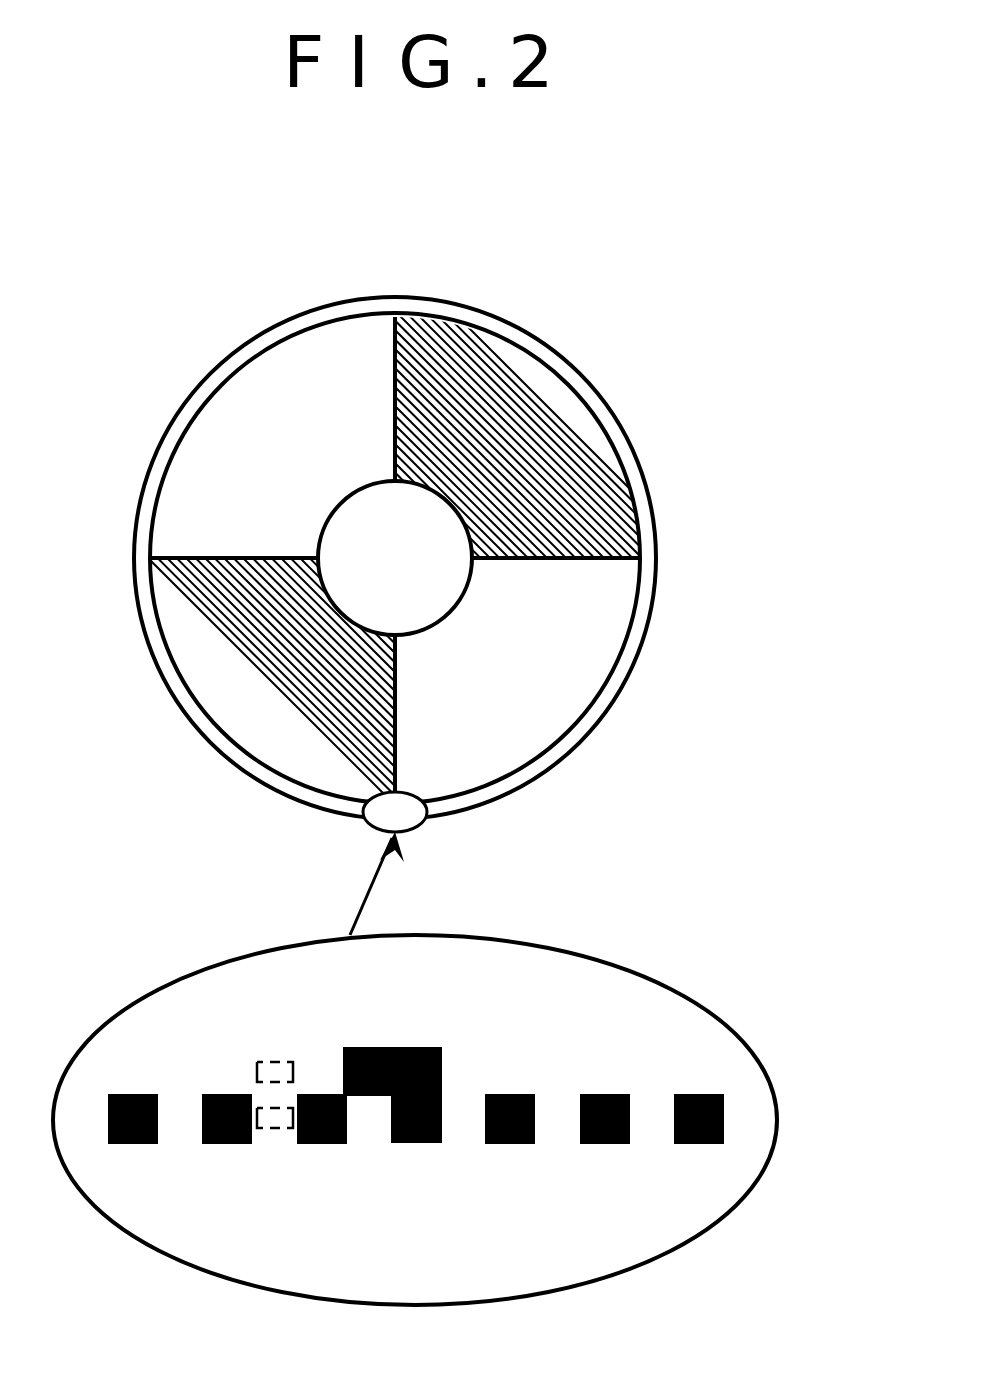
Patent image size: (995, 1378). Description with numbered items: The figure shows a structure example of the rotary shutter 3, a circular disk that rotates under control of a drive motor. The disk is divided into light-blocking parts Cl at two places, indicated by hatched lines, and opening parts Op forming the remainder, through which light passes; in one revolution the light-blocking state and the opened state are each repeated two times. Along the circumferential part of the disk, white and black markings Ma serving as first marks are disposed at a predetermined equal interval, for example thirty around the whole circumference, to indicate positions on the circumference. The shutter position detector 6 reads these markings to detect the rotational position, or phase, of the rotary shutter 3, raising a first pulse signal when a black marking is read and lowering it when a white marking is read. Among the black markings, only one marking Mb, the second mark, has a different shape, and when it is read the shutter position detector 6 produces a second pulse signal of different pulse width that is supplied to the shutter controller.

The rotary shutter 3 is at (522, 312).
The light-blocking part Cl is at (543, 392).
The opening part Op is at (202, 460).
The marking (first mark) Ma is at (600, 1143).
The marking (second mark) Mb is at (400, 1047).
The shutter position detector 6 is at (275, 1062).